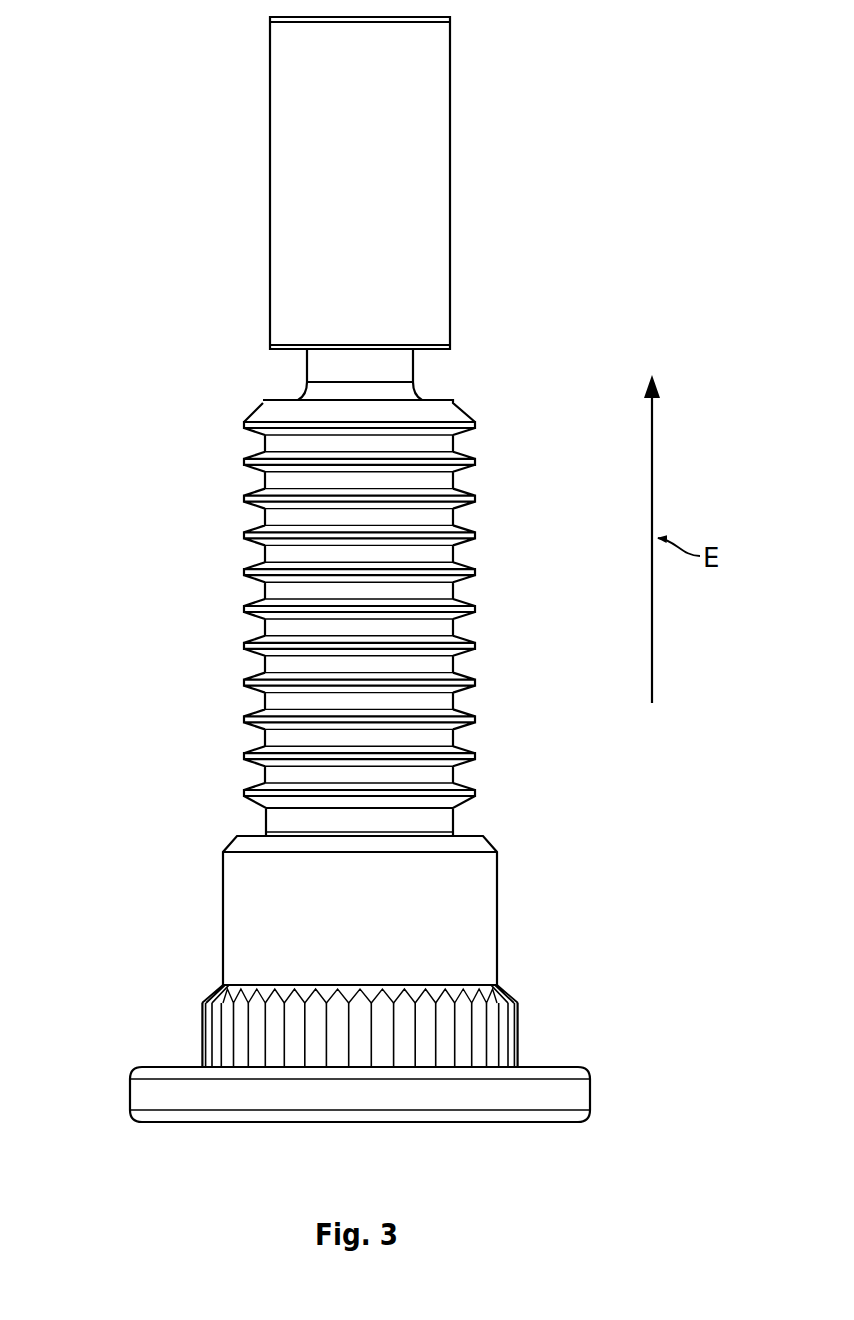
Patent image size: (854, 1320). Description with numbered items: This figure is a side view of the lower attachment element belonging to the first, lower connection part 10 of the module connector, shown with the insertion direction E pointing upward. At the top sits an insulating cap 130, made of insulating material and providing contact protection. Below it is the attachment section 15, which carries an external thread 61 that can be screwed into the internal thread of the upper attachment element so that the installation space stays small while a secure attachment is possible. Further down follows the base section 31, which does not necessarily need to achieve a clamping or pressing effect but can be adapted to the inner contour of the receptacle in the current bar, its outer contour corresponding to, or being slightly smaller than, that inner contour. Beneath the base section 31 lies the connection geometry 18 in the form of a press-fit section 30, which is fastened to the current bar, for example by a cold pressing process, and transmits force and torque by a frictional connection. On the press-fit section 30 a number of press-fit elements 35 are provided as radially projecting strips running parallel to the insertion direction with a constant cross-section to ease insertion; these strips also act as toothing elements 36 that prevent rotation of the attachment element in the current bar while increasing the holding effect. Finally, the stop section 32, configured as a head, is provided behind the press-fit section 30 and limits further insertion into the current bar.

The first, lower connection part 10 is at (207, 86).
The insulating cap 130 is at (465, 90).
The attachment section 15 is at (230, 437).
The external thread 61 is at (385, 526).
The base section 31 is at (265, 888).
The connection geometry 18 is at (205, 983).
The toothing elements 36 is at (508, 988).
The press-fit section 30 is at (240, 1018).
The press-fit elements 35 is at (473, 1036).
The stop section 32 is at (162, 1099).